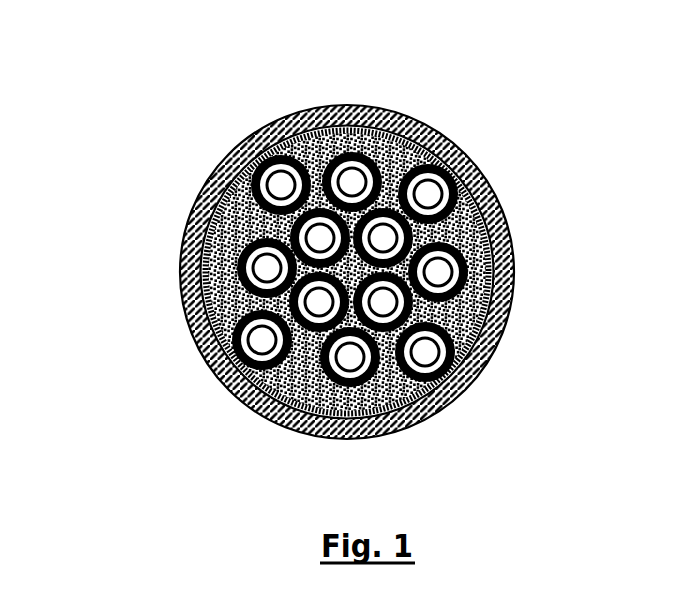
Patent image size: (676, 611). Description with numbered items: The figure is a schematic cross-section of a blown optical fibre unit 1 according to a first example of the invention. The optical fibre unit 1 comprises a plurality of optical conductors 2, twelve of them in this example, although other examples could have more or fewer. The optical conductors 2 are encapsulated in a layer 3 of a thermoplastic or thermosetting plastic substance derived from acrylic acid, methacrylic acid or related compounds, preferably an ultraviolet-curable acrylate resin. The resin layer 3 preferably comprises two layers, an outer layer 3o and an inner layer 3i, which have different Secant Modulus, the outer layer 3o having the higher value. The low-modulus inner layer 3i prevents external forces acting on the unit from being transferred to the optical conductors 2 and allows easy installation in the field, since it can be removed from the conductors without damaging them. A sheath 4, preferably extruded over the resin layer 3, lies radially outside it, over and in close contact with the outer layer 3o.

The blown optical fibre unit 1 is at (186, 119).
The optical conductors 2 is at (432, 136).
The layer 3 is at (186, 220).
The outer layer 3o is at (182, 283).
The inner layer 3i is at (192, 327).
The sheath 4 is at (507, 315).